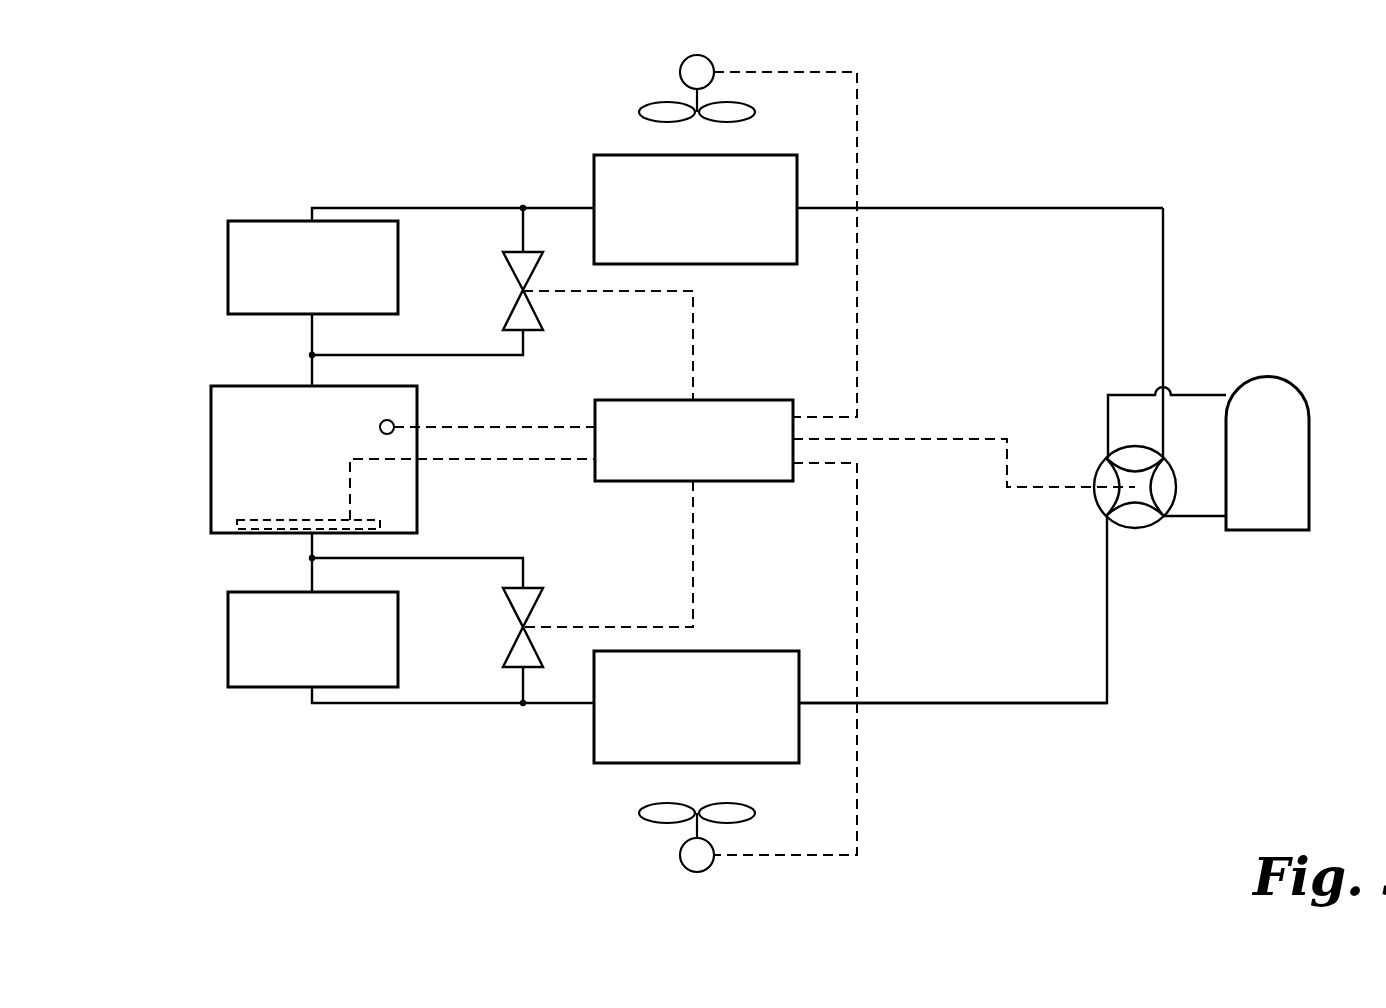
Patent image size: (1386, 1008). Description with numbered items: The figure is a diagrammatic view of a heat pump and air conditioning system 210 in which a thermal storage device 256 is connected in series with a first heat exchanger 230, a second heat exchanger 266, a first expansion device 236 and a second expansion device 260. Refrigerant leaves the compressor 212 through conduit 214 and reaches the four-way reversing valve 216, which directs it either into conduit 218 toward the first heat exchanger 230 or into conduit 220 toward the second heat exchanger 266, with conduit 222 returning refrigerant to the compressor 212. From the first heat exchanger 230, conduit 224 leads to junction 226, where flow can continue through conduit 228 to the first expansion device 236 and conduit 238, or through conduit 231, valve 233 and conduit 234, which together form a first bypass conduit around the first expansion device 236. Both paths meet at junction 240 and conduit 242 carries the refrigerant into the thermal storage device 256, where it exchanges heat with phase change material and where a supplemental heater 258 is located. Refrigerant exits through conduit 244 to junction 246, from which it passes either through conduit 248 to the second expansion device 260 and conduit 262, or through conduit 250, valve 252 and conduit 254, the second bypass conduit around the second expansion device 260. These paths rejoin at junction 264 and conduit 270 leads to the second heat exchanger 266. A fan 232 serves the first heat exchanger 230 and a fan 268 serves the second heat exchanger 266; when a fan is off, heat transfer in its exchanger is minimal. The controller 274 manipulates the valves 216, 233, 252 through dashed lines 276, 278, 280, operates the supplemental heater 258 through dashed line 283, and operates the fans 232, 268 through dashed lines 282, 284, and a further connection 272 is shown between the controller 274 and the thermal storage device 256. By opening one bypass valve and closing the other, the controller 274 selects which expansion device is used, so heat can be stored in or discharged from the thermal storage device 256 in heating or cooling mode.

The system 210 is at (1064, 178).
The compressor 212 is at (1270, 377).
The conduit 214 is at (1180, 395).
The valve 216 is at (1128, 537).
The conduit 218 is at (1163, 272).
The conduit 220 is at (1107, 682).
The conduit 222 is at (1192, 519).
The conduit 224 is at (545, 208).
The junction 226 is at (523, 206).
The conduit 228 is at (382, 208).
The first heat exchanger 230 is at (768, 155).
The conduit 231 is at (523, 230).
The fan 232 is at (660, 78).
The valve 233 is at (512, 290).
The conduit 234 is at (417, 332).
The first expansion device 236 is at (276, 221).
The conduit 238 is at (312, 320).
The junction 240 is at (312, 356).
The conduit 242 is at (313, 380).
The conduit 244 is at (312, 540).
The junction 246 is at (312, 559).
The conduit 248 is at (313, 592).
The conduit 250 is at (470, 558).
The valve 252 is at (516, 622).
The conduit 254 is at (523, 686).
The thermal storage device 256 is at (417, 486).
The supplemental heater 258 is at (250, 520).
The second expansion device 260 is at (398, 636).
The conduit 262 is at (382, 703).
The junction 264 is at (523, 710).
The second heat exchanger 266 is at (594, 763).
The fan 268 is at (665, 838).
The conduit 270 is at (562, 708).
The control line 272 is at (478, 427).
The controller 274 is at (758, 481).
The dashed line 276 is at (944, 439).
The dashed line 278 is at (693, 330).
The dashed line 280 is at (693, 550).
The dashed line 282 is at (857, 226).
The dashed line 283 is at (522, 462).
The dashed line 284 is at (857, 600).